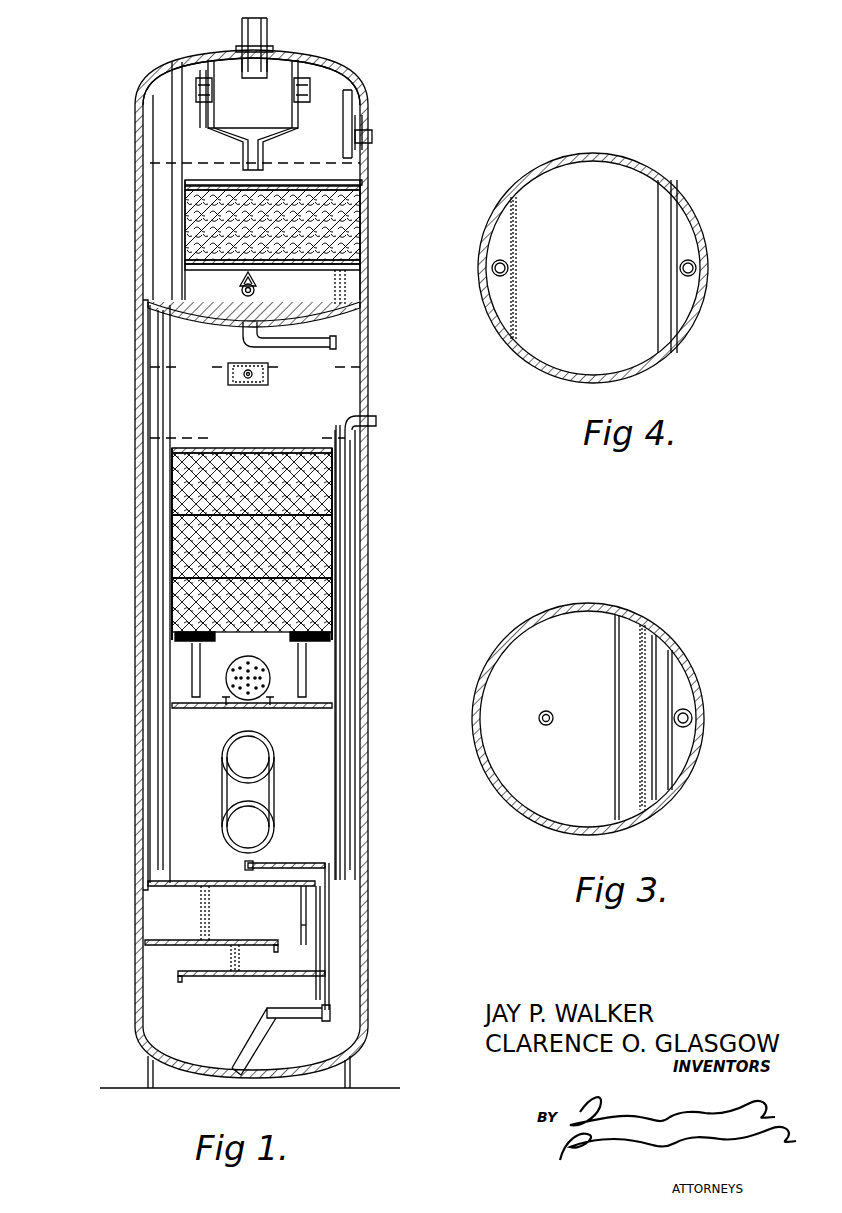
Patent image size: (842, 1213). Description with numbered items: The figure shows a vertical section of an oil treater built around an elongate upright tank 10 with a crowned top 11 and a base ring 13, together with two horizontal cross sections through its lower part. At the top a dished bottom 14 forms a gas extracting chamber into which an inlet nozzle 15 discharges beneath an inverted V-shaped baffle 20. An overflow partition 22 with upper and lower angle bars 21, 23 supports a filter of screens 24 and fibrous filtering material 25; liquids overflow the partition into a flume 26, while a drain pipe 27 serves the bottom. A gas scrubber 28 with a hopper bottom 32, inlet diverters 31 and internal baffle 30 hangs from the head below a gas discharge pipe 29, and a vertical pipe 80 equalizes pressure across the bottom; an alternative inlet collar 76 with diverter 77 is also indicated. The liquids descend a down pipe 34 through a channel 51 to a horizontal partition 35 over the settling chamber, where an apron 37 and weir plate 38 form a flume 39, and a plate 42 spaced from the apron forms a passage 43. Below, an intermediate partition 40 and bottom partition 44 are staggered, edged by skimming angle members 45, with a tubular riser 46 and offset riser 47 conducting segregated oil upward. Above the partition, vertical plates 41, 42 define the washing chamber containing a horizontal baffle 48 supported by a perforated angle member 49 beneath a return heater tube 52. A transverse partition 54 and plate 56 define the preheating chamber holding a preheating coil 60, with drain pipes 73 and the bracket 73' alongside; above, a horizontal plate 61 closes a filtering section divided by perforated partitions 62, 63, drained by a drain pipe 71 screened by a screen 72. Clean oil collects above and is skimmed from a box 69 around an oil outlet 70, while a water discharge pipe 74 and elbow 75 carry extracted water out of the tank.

In FIG. 1, the tank 10 is at (365, 372).
In FIG. 4, the tank 10 is at (496, 340).
In FIG. 3, the tank 10 is at (565, 605).
In FIG. 1, the crowned top 11 is at (352, 64).
In FIG. 1, the base ring 13 is at (148, 1066).
In FIG. 1, the dished bottom 14 is at (222, 326).
In FIG. 1, the inlet nozzle 15 is at (256, 288).
In FIG. 1, the inverted V-shaped baffle 20 is at (242, 290).
In FIG. 1, the upper transverse angle bar 21 is at (296, 180).
In FIG. 1, the overflow partition 22 is at (185, 245).
In FIG. 1, the lower transverse angle bar 23 is at (272, 276).
In FIG. 1, the screens 24 is at (272, 225).
In FIG. 1, the filtering material 25 is at (185, 190).
In FIG. 1, the flume 26 is at (185, 266).
In FIG. 1, the drain pipe 27 is at (302, 340).
In FIG. 1, the gas scrubber 28 is at (208, 122).
In FIG. 1, the gas discharge pipe 29 is at (268, 26).
In FIG. 1, the baffle 30 is at (238, 78).
In FIG. 1, the inlet diverters 31 is at (198, 84).
In FIG. 1, the hopper bottom 32 is at (238, 137).
In FIG. 1, the down pipe 34 is at (143, 470).
In FIG. 4, the down pipe 34 is at (492, 270).
In FIG. 1, the horizontal partition 35 is at (180, 883).
In FIG. 4, the horizontal partition 35 is at (548, 352).
In FIG. 1, the apron 37 is at (306, 905).
In FIG. 3, the apron 37 is at (655, 788).
In FIG. 1, the weir plate 38 is at (320, 965).
In FIG. 3, the weir plate 38 is at (640, 688).
In FIG. 1, the flume 39 is at (306, 925).
In FIG. 3, the flume 39 is at (645, 770).
In FIG. 1, the intermediate horizontal partition 40 is at (248, 946).
In FIG. 3, the intermediate horizontal partition 40 is at (540, 805).
In FIG. 1, the vertical plate 41 is at (165, 745).
In FIG. 4, the vertical plate 41 is at (520, 283).
In FIG. 1, the vertical plate 42 is at (350, 805).
In FIG. 4, the vertical plate 42 is at (678, 240).
In FIG. 3, the vertical plate 42 is at (670, 676).
In FIG. 1, the passage 43 is at (330, 880).
In FIG. 3, the passage 43 is at (660, 748).
In FIG. 1, the bottom partition 44 is at (274, 976).
In FIG. 1, the angle members 45 is at (278, 948).
In FIG. 1, the tubular riser 46 is at (231, 962).
In FIG. 3, the tubular riser 46 is at (553, 724).
In FIG. 1, the laterally offset riser 47 is at (201, 915).
In FIG. 1, the horizontal baffle 48 is at (277, 870).
In FIG. 1, the transverse angle member 49 is at (245, 865).
In FIG. 1, the channels 51 is at (140, 581).
In FIG. 4, the channels 51 is at (482, 234).
In FIG. 1, the return heater tube 52 is at (232, 762).
In FIG. 1, the transverse partition 54 is at (216, 708).
In FIG. 1, the plate 56 is at (265, 651).
In FIG. 1, the preheating coil 60 is at (232, 663).
In FIG. 1, the horizontal plate 61 is at (190, 440).
In FIG. 1, the horizontal partition 62 is at (210, 502).
In FIG. 1, the horizontal partition 63 is at (252, 582).
In FIG. 1, the box 69 is at (262, 385).
In FIG. 1, the oil outlet 70 is at (234, 380).
In FIG. 1, the drain pipe 71 is at (252, 546).
In FIG. 1, the screen 72 is at (252, 484).
In FIG. 1, the drain pipes 73 is at (297, 672).
In FIG. 1, the bracket 73' is at (288, 620).
In FIG. 1, the water discharge pipe 74 is at (350, 540).
In FIG. 4, the water discharge pipe 74 is at (697, 266).
In FIG. 3, the water discharge pipe 74 is at (692, 718).
In FIG. 1, the elbow 75 is at (345, 420).
In FIG. 1, the inlet collar 76 is at (372, 136).
In FIG. 1, the diverter 77 is at (362, 118).
In FIG. 1, the vertical pipe 80 is at (343, 112).